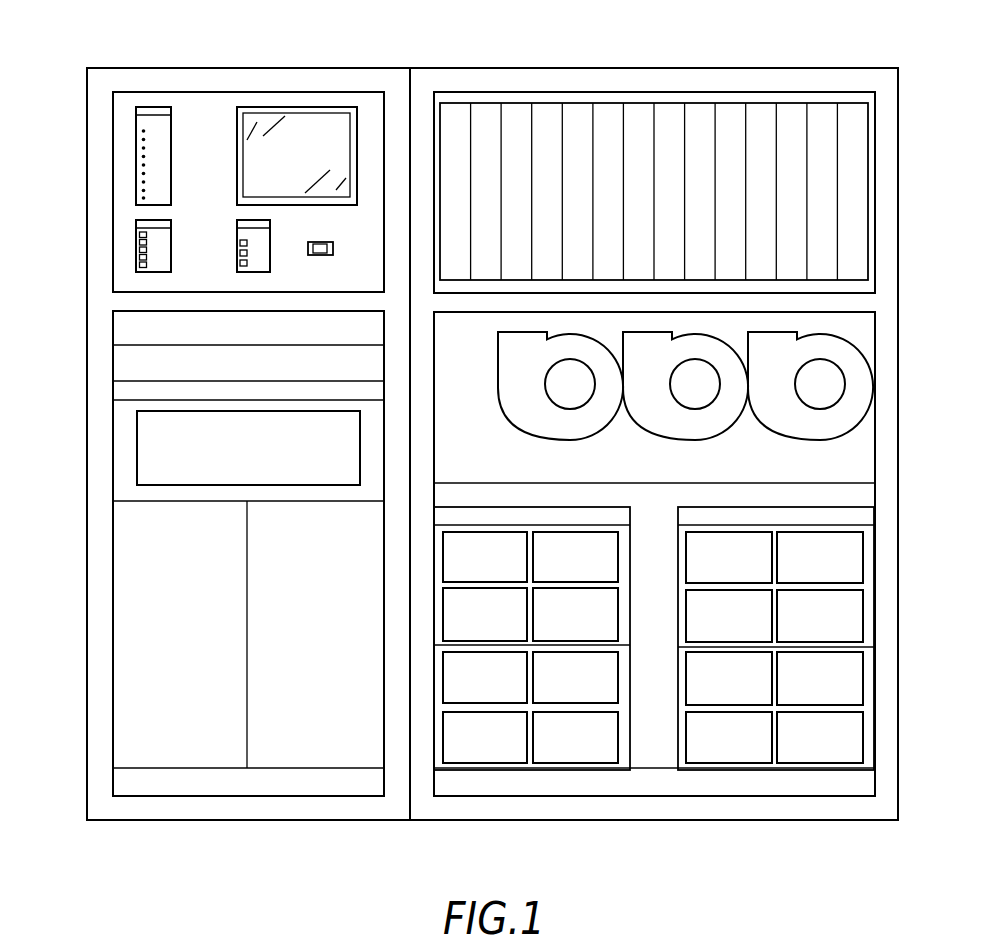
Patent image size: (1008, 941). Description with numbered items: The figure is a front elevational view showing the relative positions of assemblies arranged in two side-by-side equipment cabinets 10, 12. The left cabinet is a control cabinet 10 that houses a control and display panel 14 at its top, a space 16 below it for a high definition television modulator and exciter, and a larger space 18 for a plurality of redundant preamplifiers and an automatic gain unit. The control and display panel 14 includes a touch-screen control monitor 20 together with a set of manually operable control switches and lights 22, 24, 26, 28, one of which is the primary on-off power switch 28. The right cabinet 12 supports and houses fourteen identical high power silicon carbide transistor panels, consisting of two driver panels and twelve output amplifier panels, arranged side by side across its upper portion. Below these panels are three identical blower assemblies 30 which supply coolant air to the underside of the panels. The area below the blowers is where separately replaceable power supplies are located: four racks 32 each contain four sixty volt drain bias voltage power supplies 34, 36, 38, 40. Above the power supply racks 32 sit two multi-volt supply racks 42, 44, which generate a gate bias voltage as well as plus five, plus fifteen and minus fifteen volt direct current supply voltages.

The control cabinet 10 is at (223, 72).
The equipment cabinet 12 is at (673, 70).
The control and display panel 14 is at (125, 117).
The space for HDTV modulator and exciter 16 is at (203, 478).
The space for preamplifiers and AGC unit 18 is at (120, 666).
The touch-screen control monitor 20 is at (237, 128).
The control switch and light 22 is at (171, 182).
The control switch and light 24 is at (171, 248).
The control switch and light 26 is at (273, 243).
The primary on-off power switch 28 is at (318, 254).
The blower assembly 30 is at (503, 368).
The power supply rack 32 is at (693, 647).
The drain bias voltage power supply 34 is at (495, 570).
The drain bias voltage power supply 36 is at (738, 570).
The drain bias voltage power supply 38 is at (495, 690).
The drain bias voltage power supply 40 is at (738, 691).
The multi-volt supply rack 42 is at (503, 500).
The multi-volt supply rack 44 is at (743, 510).